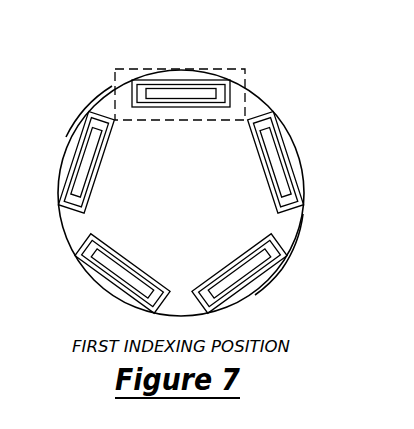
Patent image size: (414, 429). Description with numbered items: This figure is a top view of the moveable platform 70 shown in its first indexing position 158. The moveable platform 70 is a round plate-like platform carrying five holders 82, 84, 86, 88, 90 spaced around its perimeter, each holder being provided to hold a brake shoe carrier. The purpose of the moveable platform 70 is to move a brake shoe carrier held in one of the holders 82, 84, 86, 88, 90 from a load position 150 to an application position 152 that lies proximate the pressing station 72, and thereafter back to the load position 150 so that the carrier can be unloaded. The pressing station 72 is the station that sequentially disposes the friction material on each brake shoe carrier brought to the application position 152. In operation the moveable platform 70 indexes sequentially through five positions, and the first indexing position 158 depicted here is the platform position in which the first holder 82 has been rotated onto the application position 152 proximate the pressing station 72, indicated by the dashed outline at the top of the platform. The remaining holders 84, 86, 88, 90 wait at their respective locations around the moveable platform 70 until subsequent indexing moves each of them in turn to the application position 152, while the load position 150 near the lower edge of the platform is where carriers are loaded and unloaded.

The moveable platform 70 is at (296, 140).
The pressing station 72 is at (222, 68).
The holder 82 is at (182, 108).
The holder 84 is at (268, 167).
The holder 86 is at (228, 259).
The holder 88 is at (127, 262).
The holder 90 is at (100, 165).
The load position 150 is at (254, 285).
The application position 152 is at (111, 79).
The first indexing position 158 is at (313, 225).